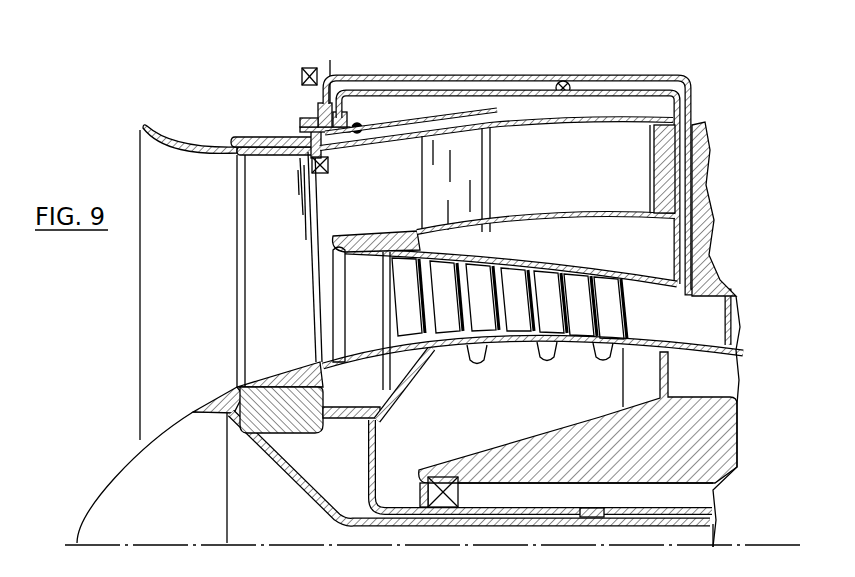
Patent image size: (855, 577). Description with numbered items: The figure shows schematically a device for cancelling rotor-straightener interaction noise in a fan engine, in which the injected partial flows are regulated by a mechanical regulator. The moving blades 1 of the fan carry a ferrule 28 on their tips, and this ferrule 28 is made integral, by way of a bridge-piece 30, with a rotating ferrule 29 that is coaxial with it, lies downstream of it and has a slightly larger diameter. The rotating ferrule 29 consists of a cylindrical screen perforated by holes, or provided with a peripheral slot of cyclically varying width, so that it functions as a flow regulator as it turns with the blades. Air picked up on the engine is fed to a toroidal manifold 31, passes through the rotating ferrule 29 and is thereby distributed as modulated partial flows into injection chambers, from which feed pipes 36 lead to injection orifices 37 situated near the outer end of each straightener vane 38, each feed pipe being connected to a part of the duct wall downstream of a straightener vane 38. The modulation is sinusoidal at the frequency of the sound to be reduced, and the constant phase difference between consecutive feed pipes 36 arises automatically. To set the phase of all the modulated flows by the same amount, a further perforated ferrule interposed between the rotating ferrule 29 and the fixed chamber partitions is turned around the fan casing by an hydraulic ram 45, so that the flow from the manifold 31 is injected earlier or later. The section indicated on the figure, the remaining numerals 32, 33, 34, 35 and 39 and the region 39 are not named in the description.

The moving blades 1 is at (282, 287).
The ferrule 28 is at (250, 142).
The rotating ferrule 29 is at (338, 121).
The bridge-piece 30 is at (312, 127).
The toroidal manifold 31 is at (322, 104).
The manifold inner wall 32 is at (680, 203).
The inner wall end 33 is at (681, 288).
The casing 34 is at (700, 150).
The manifold duct 35 is at (567, 93).
The feed pipes 36 is at (466, 116).
The injection orifices 37 is at (490, 126).
The straightener vane 38 is at (444, 171).
The chamber 39 is at (600, 180).
The hydraulic ram 45 is at (360, 126).